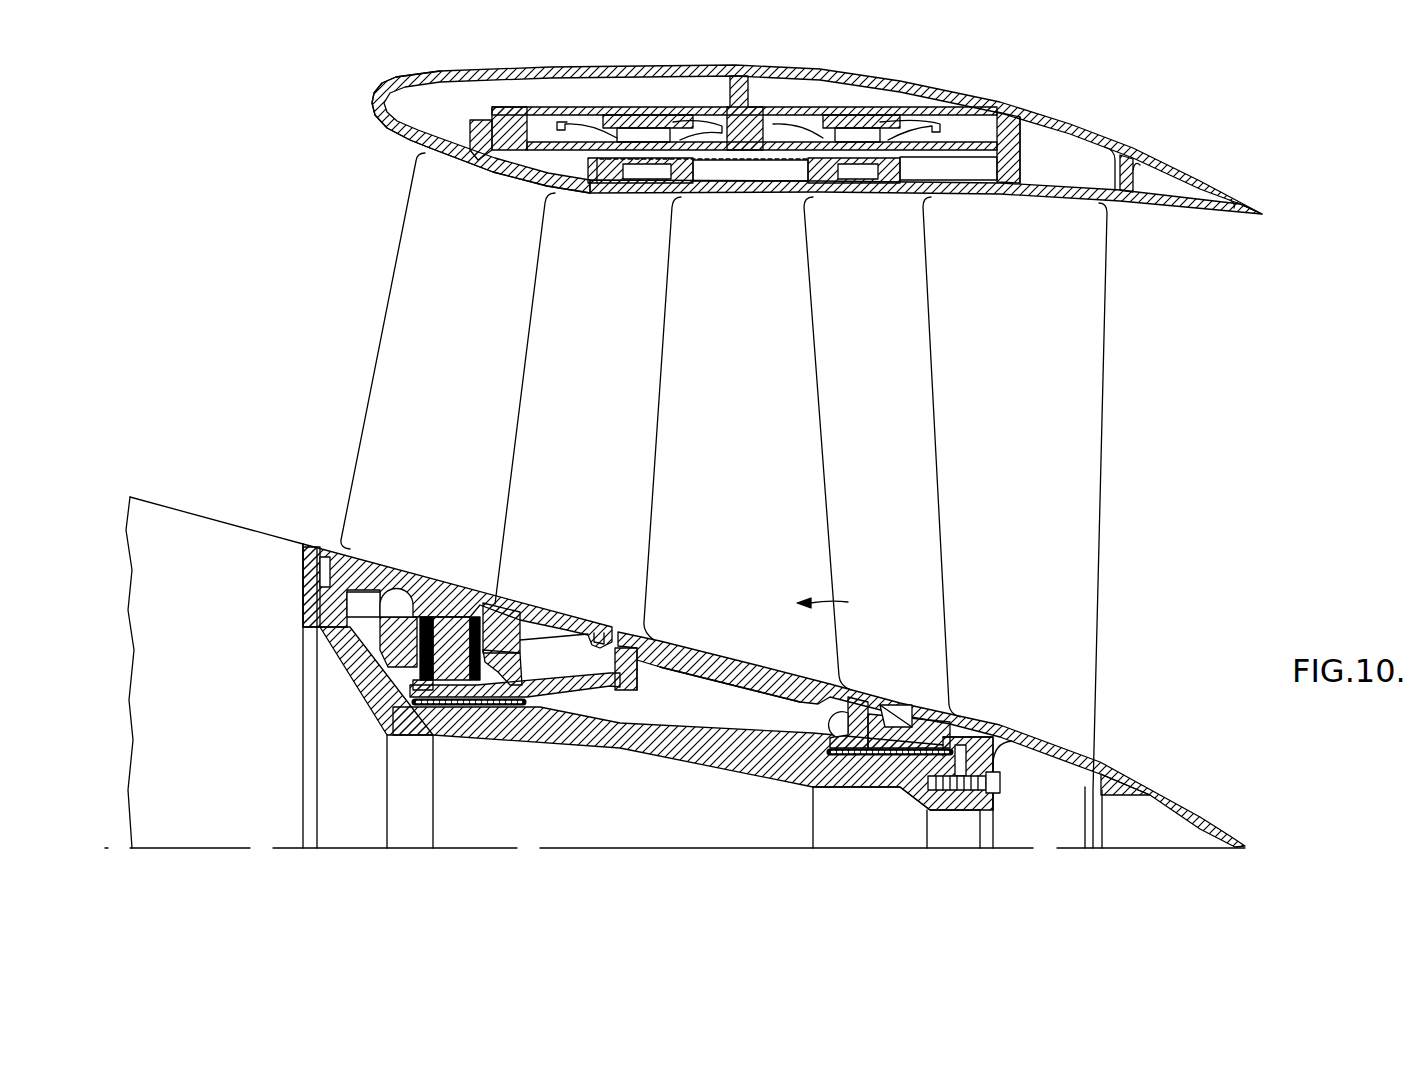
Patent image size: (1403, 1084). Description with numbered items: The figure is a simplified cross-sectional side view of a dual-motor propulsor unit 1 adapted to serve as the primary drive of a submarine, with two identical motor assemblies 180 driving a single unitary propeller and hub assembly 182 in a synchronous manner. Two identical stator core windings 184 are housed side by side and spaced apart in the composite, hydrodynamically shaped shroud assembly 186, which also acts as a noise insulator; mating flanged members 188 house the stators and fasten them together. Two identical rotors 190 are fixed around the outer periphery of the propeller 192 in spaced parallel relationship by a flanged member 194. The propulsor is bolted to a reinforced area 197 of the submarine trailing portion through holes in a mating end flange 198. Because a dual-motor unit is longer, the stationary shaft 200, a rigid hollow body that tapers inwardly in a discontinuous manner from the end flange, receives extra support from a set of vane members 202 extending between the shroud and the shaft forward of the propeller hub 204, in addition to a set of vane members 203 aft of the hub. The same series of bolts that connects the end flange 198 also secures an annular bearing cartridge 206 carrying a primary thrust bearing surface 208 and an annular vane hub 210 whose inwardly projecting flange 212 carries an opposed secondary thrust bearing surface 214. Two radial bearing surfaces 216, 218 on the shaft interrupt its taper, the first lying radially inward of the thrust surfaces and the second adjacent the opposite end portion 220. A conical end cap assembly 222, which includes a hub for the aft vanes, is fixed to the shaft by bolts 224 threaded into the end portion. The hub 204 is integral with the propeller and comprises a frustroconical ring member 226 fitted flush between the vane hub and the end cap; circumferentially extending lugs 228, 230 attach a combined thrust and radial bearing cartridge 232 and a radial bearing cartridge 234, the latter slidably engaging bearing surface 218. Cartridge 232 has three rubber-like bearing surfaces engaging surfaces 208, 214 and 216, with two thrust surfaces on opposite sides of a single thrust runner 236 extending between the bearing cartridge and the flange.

The propulsor unit 1 is at (1082, 108).
The motor assembly 180 is at (645, 100).
The propeller and hub assembly 182 is at (844, 600).
The stator core winding 184 is at (628, 108).
The shroud assembly 186 is at (446, 70).
The mating flanged member 188 is at (747, 88).
The rotor 190 is at (647, 185).
The propeller 192 is at (762, 405).
The flanged member 194 is at (732, 194).
The reinforced area 197 is at (303, 558).
The mating end flange 198 is at (328, 586).
The stationary shaft 200 is at (634, 820).
The vane member 202 is at (477, 370).
The vane member 203 is at (1040, 370).
The propeller hub 204 is at (727, 656).
The annular bearing cartridge 206 is at (388, 596).
The primary thrust bearing surface 208 is at (420, 600).
The annular vane hub 210 is at (590, 620).
The inwardly projecting flange 212 is at (520, 640).
The secondary thrust bearing surface 214 is at (497, 602).
The radial bearing surface 216 is at (463, 710).
The radial bearing surface 218 is at (873, 782).
The end portion 220 is at (964, 740).
The conical end cap assembly 222 is at (1128, 780).
The bolt 224 is at (1000, 786).
The frustroconical ring member 226 is at (736, 688).
The circumferentially extending lug 228 is at (656, 680).
The circumferentially extending lug 230 is at (843, 717).
The combined thrust and radial bearing cartridge 232 is at (586, 696).
The radial bearing cartridge 234 is at (903, 712).
The thrust runner 236 is at (507, 663).